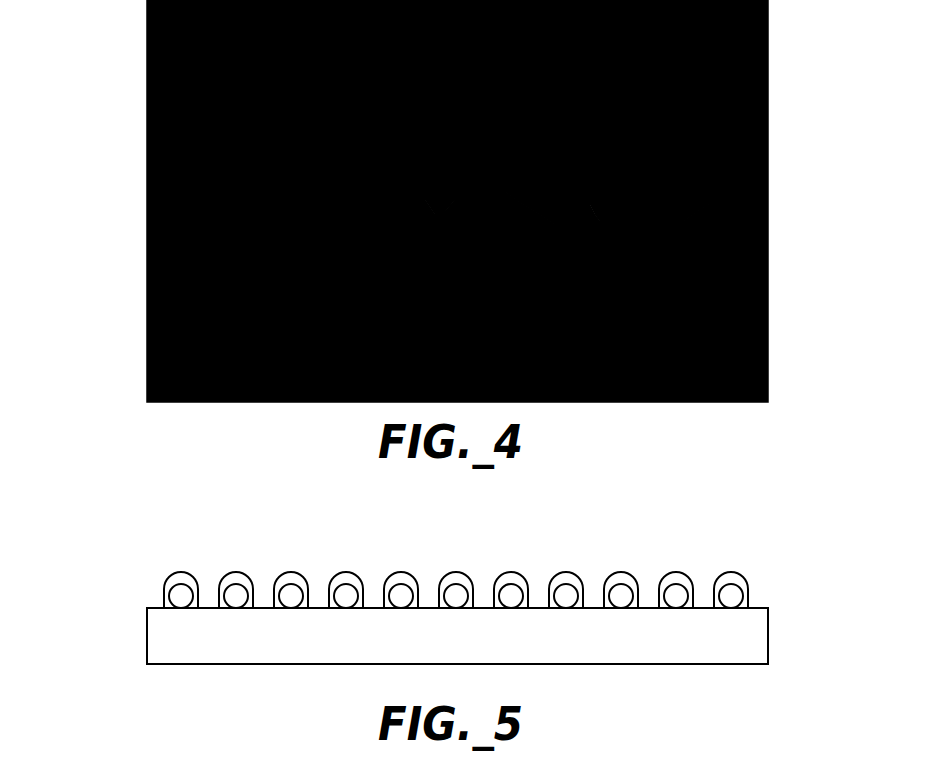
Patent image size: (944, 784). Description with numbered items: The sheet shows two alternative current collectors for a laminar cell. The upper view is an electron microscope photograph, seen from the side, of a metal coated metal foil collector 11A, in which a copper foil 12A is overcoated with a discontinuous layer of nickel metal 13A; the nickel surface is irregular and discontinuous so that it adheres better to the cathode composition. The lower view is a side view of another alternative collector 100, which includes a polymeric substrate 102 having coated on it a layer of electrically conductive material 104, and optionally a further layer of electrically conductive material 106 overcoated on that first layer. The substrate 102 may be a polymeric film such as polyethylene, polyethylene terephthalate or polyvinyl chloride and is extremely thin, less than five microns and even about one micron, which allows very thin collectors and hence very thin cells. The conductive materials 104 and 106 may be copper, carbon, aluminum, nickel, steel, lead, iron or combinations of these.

In FIG. 4, the collector 11A is at (118, 221).
In FIG. 4, the discontinuous layer of nickel metal 13A is at (148, 158).
In FIG. 4, the copper foil 12A is at (148, 270).
In FIG. 5, the current collector 100 is at (779, 621).
In FIG. 5, the polymeric substrate 102 is at (168, 645).
In FIG. 5, the layer of electrically conductive material 104 is at (179, 597).
In FIG. 5, the layer of electrically conductive material 106 is at (223, 573).